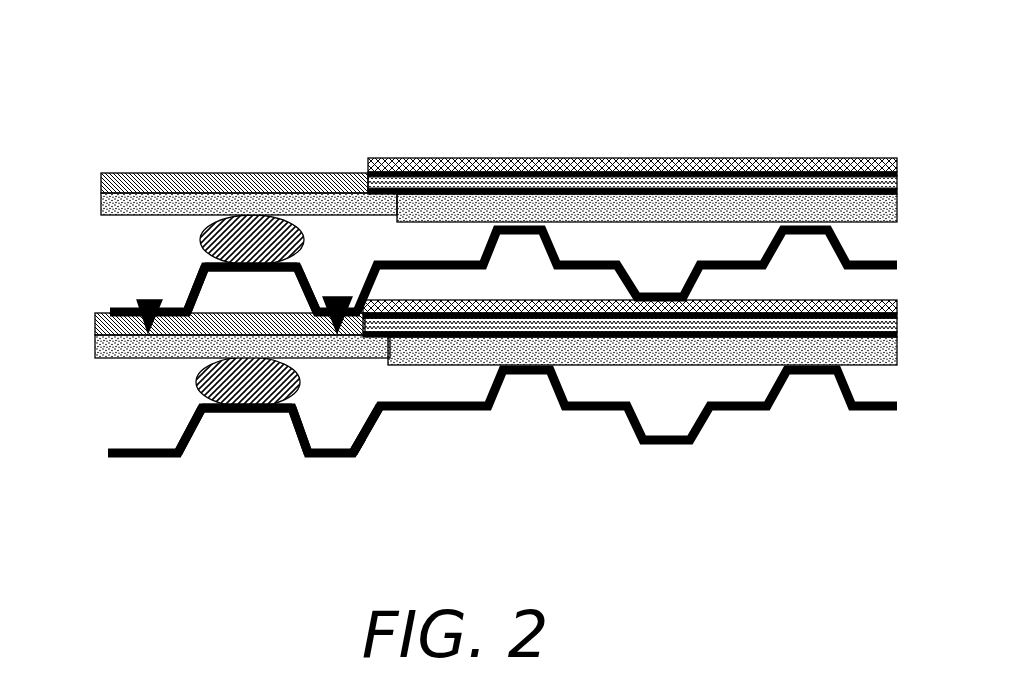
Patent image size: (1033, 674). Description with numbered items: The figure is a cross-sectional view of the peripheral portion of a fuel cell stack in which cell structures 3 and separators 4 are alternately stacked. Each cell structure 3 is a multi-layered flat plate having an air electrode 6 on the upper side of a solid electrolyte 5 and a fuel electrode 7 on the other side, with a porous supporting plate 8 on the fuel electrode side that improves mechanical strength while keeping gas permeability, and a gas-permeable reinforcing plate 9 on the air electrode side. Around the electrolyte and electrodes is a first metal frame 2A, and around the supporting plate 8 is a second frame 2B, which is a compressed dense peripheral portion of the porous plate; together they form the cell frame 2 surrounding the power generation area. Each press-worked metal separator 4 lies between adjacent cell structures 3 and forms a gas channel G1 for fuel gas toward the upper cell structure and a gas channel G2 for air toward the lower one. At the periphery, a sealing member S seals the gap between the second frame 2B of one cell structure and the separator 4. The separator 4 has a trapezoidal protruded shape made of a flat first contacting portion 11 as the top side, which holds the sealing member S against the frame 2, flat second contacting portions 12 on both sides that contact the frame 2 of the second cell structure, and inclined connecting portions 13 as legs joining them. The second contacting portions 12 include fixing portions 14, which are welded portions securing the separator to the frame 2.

The cell frame 2 is at (209, 255).
The first metal frame 2A is at (110, 172).
The second frame 2B is at (147, 193).
The cell structure 3 is at (630, 287).
The separator 4 is at (724, 243).
The solid electrolyte 5 is at (827, 183).
The air electrode 6 is at (596, 173).
The fuel electrode 7 is at (635, 193).
The supporting plate 8 is at (523, 212).
The reinforcing plate 9 is at (501, 158).
The first contacting portion 11 is at (276, 271).
The second contacting portion 12 is at (130, 307).
The connecting portion 13 is at (182, 292).
The fixing portion 14 is at (148, 300).
The sealing member S is at (247, 237).
The gas channel for fuel gas G1 is at (670, 272).
The gas channel for air G2 is at (505, 292).